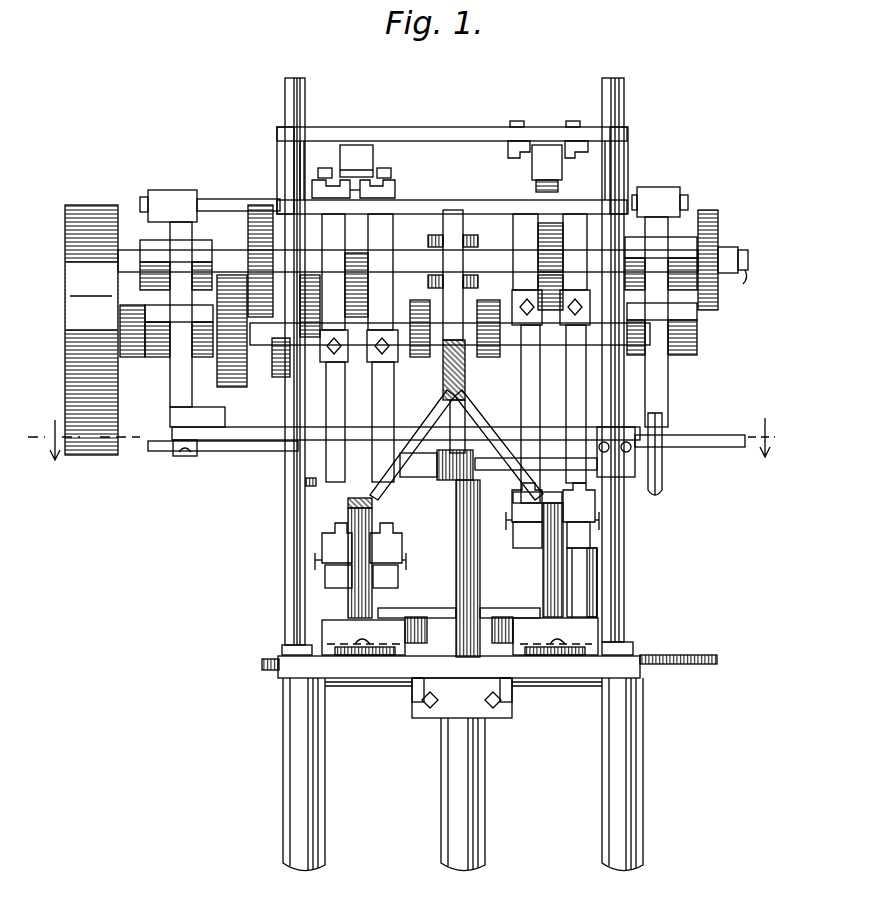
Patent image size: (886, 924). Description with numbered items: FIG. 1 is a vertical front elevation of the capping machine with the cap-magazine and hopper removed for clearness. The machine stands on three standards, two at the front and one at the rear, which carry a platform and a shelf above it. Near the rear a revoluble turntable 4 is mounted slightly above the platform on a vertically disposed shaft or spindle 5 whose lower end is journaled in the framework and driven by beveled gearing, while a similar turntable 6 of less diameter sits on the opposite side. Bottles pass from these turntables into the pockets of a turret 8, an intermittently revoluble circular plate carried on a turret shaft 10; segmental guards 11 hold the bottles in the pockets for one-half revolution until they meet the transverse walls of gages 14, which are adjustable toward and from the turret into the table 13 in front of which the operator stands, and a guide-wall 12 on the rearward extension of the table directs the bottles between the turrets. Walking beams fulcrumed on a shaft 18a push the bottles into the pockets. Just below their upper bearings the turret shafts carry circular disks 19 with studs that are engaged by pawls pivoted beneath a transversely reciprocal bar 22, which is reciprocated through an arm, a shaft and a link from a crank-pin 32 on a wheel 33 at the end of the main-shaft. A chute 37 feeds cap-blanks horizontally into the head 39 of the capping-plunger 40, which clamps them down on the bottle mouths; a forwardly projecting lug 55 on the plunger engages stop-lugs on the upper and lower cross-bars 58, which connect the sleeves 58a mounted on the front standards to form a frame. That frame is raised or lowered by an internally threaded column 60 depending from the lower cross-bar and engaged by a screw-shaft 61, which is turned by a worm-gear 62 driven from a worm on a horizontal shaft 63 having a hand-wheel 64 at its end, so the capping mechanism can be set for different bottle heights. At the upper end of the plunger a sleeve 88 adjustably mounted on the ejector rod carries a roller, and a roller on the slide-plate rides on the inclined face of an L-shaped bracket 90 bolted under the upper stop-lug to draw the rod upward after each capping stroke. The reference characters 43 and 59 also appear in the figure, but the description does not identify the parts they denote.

The turntable 4 is at (708, 636).
The shaft or spindle 5 is at (597, 578).
The turntable 6 is at (262, 660).
The turret 8 is at (427, 628).
The turret shaft 10 is at (358, 594).
The segmental guard 11 is at (282, 650).
The guide-wall 12 is at (410, 608).
The table 13 is at (395, 680).
The gage 14 is at (460, 636).
The shaft 18a is at (226, 203).
The circular disk 19 is at (306, 482).
The transversely reciprocal bar 22 is at (703, 437).
The crank-pin 32 is at (750, 254).
The wheel 33 is at (712, 210).
The chute 37 is at (734, 247).
The head 39 is at (322, 556).
The capping-plunger 40 is at (520, 418).
The frame plate 43 is at (170, 390).
The lug 55 is at (312, 188).
The cross-bar 58 is at (436, 127).
The sleeve 58a is at (658, 150).
The post 59 is at (284, 88).
The column 60 is at (454, 210).
The screw-shaft 61 is at (412, 445).
The worm-gear 62 is at (440, 478).
The horizontal shaft 63 is at (512, 478).
The hand-wheel 64 is at (662, 486).
The sleeve 88 is at (380, 168).
The bracket 90 is at (362, 145).